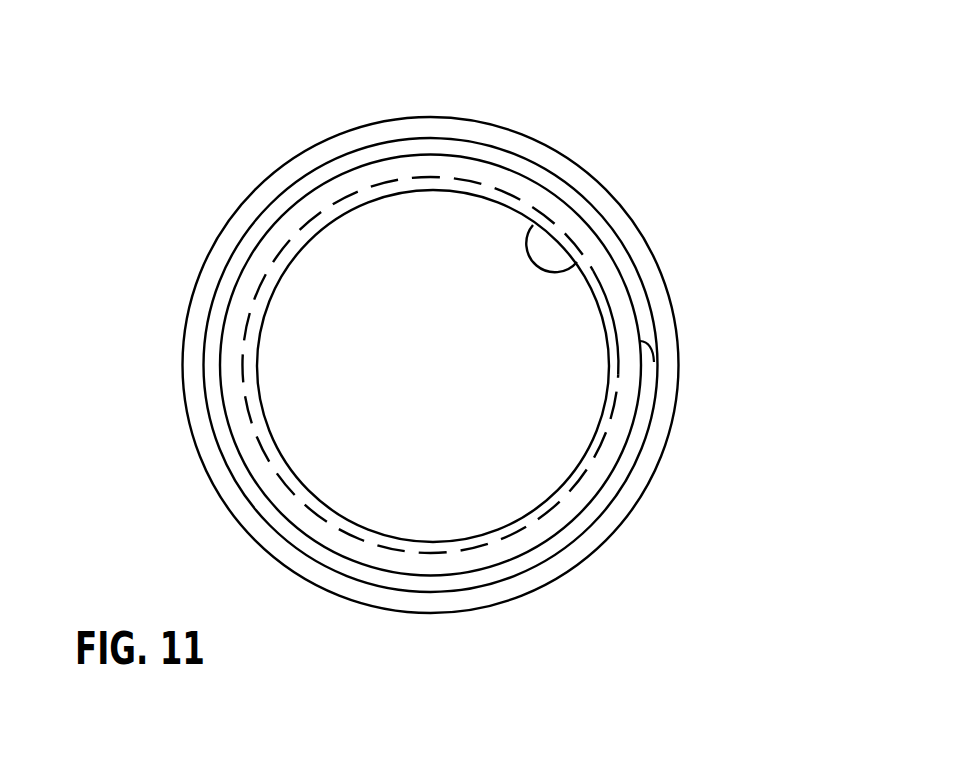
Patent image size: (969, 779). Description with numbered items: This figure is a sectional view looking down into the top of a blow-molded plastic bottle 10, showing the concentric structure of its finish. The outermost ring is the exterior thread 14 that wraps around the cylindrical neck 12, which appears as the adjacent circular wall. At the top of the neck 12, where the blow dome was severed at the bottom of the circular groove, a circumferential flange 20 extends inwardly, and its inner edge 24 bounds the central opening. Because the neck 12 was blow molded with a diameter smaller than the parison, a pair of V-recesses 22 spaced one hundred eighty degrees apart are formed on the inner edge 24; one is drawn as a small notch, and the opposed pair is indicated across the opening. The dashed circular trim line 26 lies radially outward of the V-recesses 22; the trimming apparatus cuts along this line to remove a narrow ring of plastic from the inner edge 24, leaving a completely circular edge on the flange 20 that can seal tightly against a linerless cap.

The bottle 10 is at (183, 498).
The cylindrical neck 12 is at (245, 267).
The exterior thread 14 is at (657, 388).
The circumferential flange 20 is at (548, 527).
The V-recesses 22 is at (609, 368).
The inner edge 24 is at (573, 264).
The circular trim line 26 is at (473, 183).